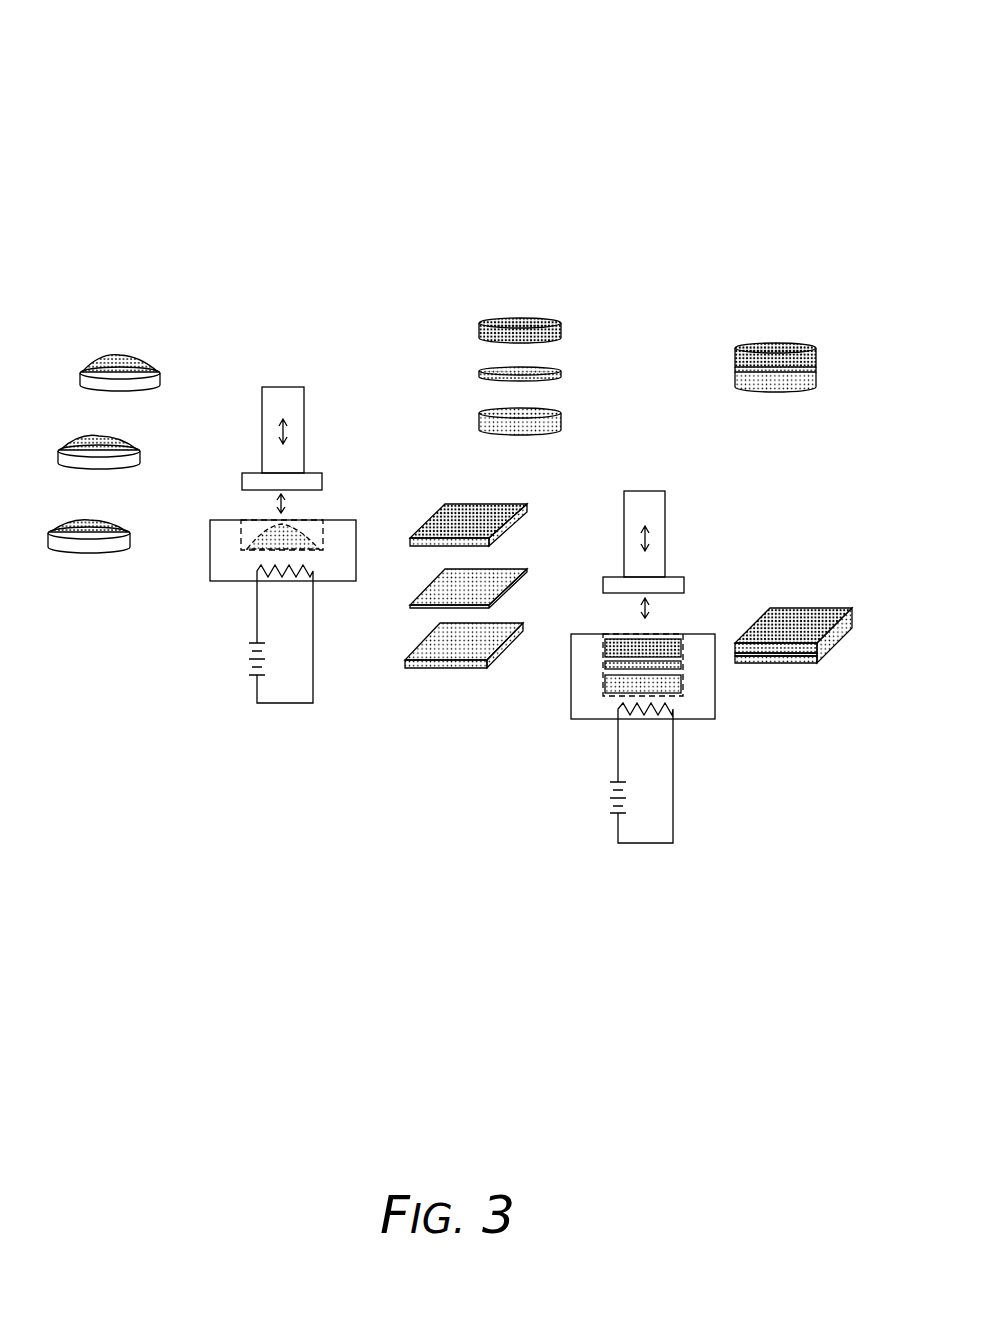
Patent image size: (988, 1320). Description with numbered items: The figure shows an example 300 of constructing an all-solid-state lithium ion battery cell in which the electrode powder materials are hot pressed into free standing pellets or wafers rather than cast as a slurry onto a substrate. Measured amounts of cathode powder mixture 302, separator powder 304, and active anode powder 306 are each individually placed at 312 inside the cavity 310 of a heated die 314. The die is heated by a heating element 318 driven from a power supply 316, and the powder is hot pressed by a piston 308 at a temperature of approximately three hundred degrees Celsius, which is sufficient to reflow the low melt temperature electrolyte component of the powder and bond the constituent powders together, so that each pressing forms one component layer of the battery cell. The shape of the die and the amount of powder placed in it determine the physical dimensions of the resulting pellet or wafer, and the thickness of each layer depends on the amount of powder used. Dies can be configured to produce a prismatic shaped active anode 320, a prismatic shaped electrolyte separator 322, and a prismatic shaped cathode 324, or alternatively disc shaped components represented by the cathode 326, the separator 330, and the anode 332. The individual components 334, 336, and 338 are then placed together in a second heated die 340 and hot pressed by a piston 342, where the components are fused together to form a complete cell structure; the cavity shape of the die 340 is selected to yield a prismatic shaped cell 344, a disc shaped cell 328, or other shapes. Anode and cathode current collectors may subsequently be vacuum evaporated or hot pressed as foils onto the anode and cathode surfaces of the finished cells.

The example of constructing an all-solid-state lithium ion battery cell 300 is at (653, 68).
The cathode powder mixture 302 is at (116, 407).
The separator powder 304 is at (82, 466).
The active anode powder 306 is at (78, 552).
The piston 308 is at (262, 432).
The cavity 310 is at (244, 548).
The powder placement location 312 is at (250, 536).
The heated die 314 is at (210, 578).
The power supply 316 is at (257, 626).
The heating element 318 is at (297, 576).
The prismatic shaped active anode 320 is at (424, 529).
The prismatic shaped electrolyte separator 322 is at (412, 607).
The prismatic shaped cathode 324 is at (408, 668).
The disc shaped cathode 326 is at (480, 320).
The disc shaped cell 328 is at (735, 358).
The disc shaped separator 330 is at (480, 371).
The disc shaped anode 332 is at (480, 422).
The individual cell component 334 is at (618, 638).
The individual cell component 336 is at (605, 666).
The individual cell component 338 is at (604, 688).
The heated die 340 is at (588, 720).
The piston 342 is at (684, 585).
The prismatic shaped cell 344 is at (778, 664).